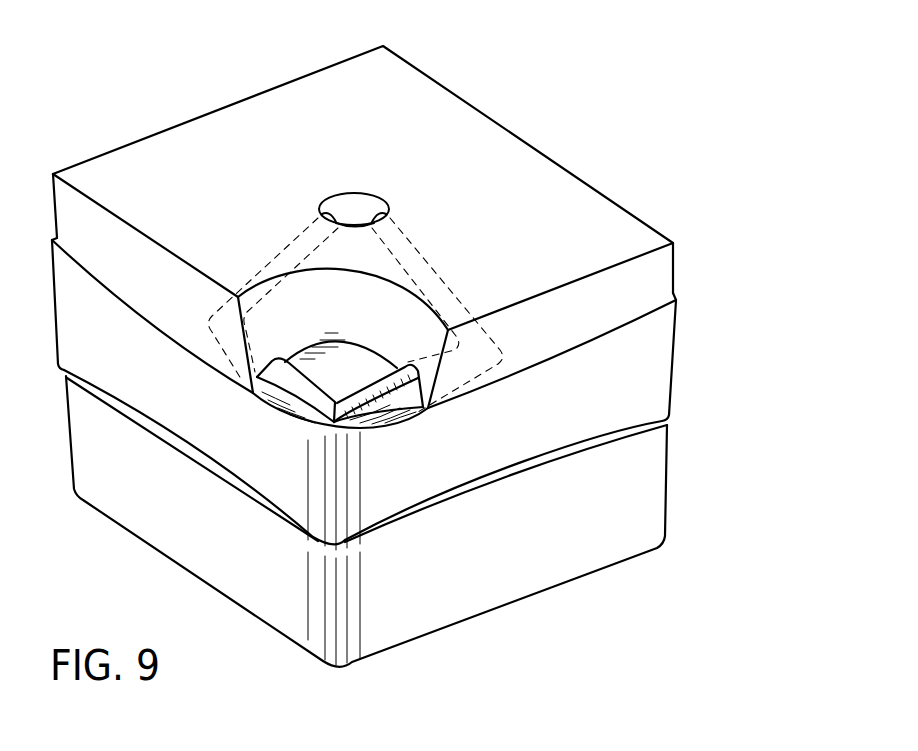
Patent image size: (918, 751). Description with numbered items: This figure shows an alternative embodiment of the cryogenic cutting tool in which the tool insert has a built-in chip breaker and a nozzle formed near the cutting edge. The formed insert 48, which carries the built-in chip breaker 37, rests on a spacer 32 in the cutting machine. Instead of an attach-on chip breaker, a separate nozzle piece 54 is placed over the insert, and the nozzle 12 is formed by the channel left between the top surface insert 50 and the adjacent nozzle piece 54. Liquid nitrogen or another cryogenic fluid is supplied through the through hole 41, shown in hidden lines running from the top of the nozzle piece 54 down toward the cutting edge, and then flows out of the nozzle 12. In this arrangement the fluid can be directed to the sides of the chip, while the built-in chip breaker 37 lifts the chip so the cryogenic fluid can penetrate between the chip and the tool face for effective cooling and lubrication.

The nozzle piece 54 is at (500, 131).
The formed insert 48 is at (399, 394).
The spacer 32 is at (660, 493).
The top surface insert 50 is at (570, 357).
The through hole 41 is at (264, 264).
The nozzle 12 is at (272, 360).
The built-in chip breaker 37 is at (294, 390).